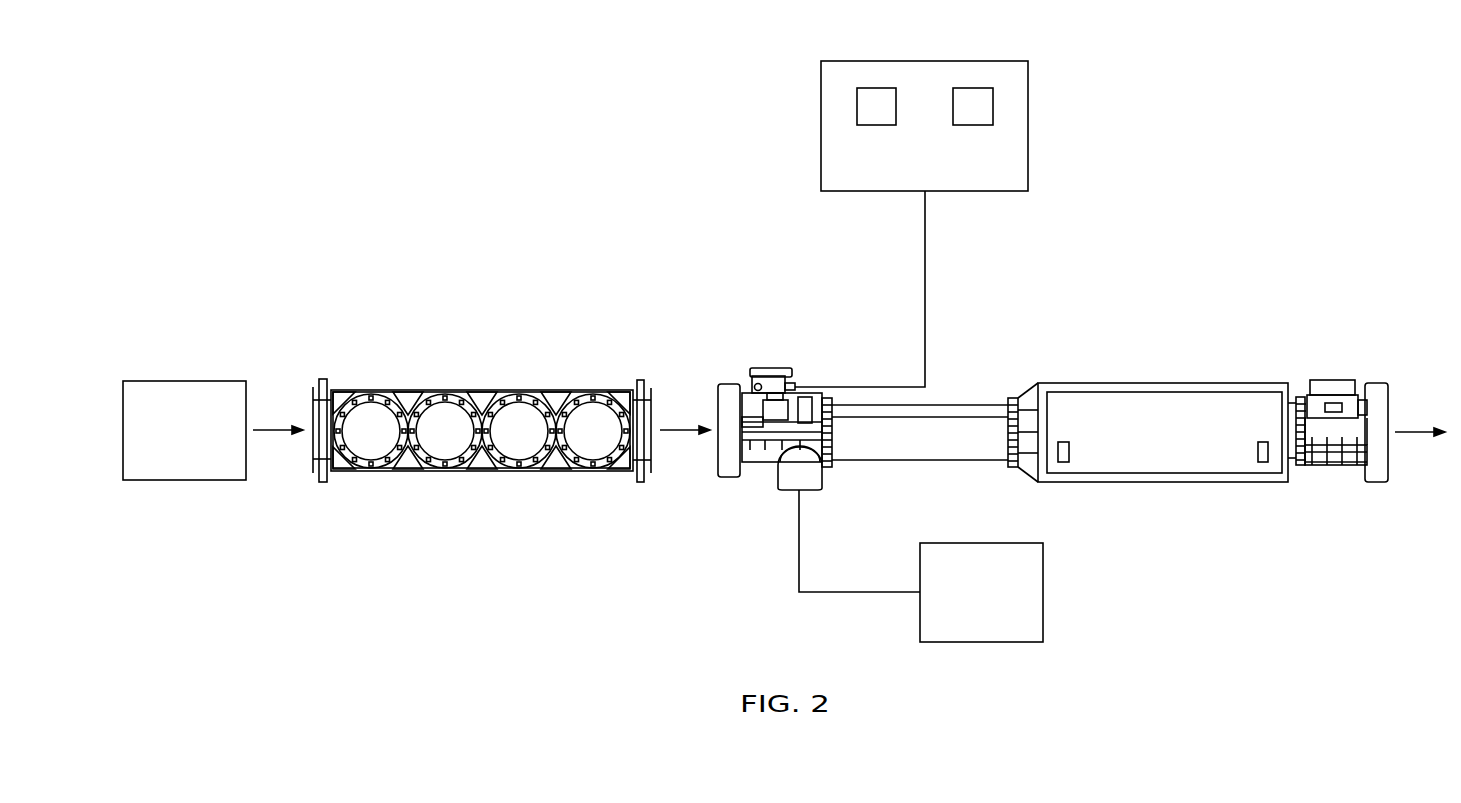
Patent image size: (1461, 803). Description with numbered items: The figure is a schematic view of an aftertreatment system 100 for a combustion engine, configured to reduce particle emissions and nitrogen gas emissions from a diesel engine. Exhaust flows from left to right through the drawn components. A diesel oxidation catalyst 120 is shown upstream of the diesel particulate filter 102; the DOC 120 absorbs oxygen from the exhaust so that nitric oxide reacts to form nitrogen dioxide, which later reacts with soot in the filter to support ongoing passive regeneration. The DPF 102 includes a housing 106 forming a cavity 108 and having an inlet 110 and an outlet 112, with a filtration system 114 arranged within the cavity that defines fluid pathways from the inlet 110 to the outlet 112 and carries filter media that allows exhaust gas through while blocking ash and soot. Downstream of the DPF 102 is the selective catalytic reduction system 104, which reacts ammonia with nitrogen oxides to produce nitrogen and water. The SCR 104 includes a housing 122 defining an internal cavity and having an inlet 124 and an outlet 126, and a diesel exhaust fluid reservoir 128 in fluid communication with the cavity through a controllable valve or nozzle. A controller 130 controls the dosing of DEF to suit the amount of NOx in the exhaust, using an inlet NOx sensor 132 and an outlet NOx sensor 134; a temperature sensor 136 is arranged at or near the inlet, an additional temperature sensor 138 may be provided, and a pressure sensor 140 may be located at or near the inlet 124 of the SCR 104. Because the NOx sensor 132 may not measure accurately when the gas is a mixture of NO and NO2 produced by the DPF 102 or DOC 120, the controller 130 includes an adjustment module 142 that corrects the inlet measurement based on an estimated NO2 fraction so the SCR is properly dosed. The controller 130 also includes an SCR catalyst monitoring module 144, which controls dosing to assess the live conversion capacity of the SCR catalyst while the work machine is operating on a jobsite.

The aftertreatment system 100 is at (214, 114).
The diesel particulate filter 102 is at (477, 427).
The selective catalytic reduction system 104 is at (1060, 408).
The housing 106 is at (378, 388).
The cavity 108 is at (483, 393).
The inlet 110 is at (323, 482).
The outlet 112 is at (652, 403).
The filtration system 114 is at (440, 462).
The diesel oxidation catalyst 120 is at (187, 381).
The housing 122 is at (1163, 383).
The inlet 124 is at (718, 457).
The outlet 126 is at (1388, 463).
The diesel exhaust fluid reservoir 128 is at (982, 543).
The controller 130 is at (911, 209).
The inlet NOx sensor 132 is at (806, 458).
The outlet NOx sensor 134 is at (1348, 365).
The temperature sensor 136 is at (789, 348).
The temperature sensor 138 is at (1333, 402).
The pressure sensor 140 is at (773, 358).
The adjustment module 142 is at (872, 112).
The SCR catalyst monitoring module 144 is at (968, 112).